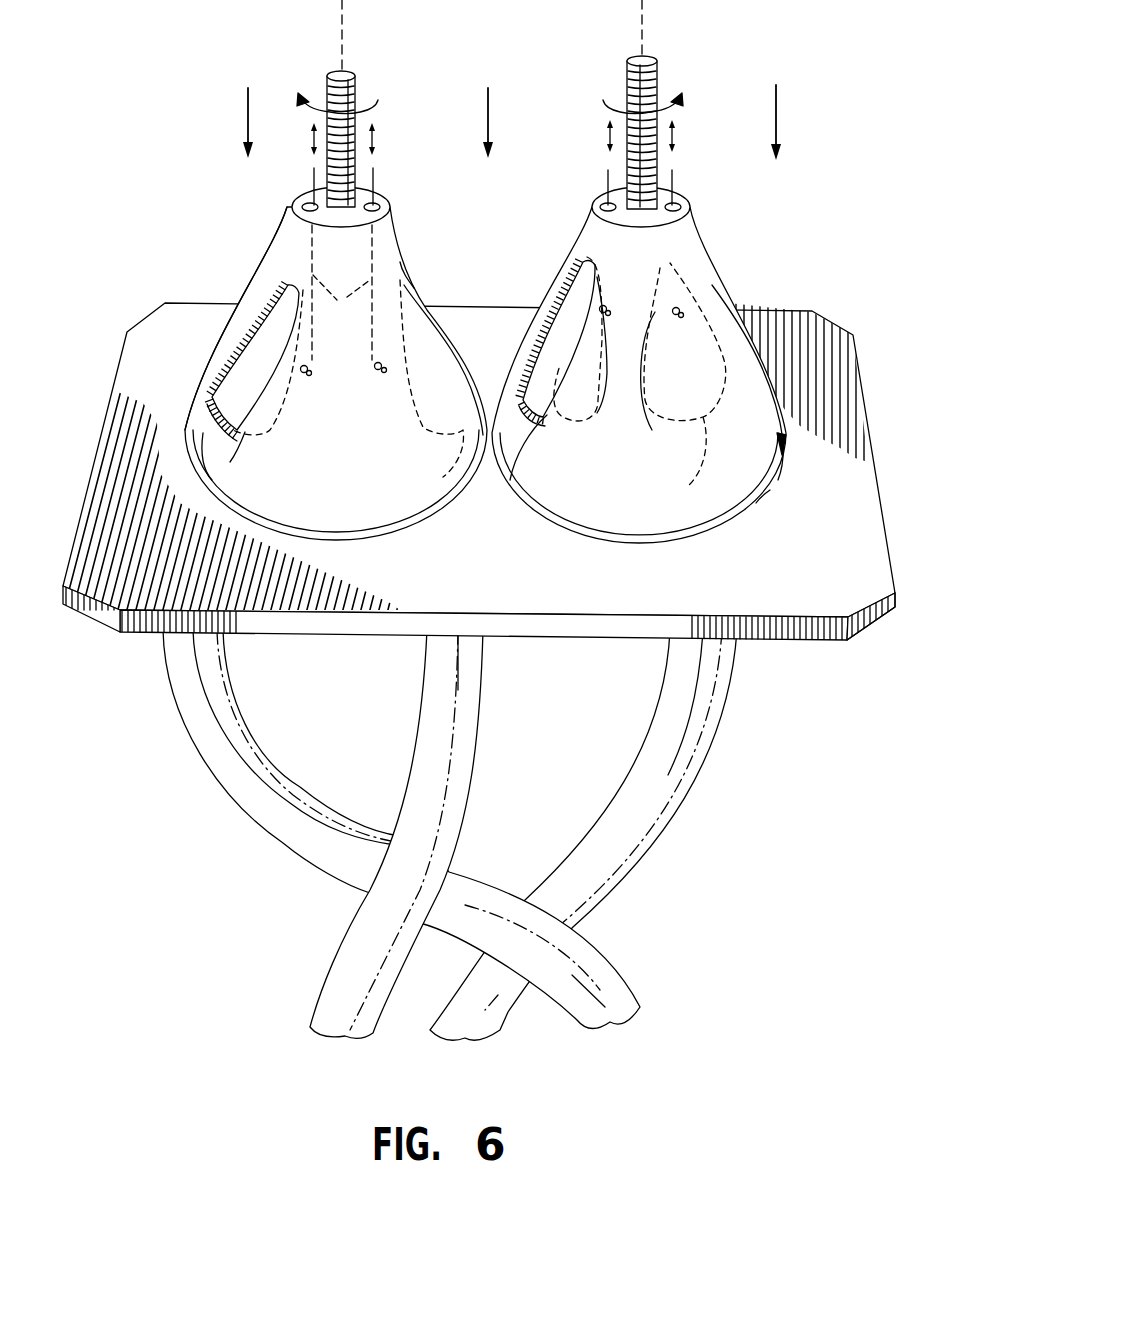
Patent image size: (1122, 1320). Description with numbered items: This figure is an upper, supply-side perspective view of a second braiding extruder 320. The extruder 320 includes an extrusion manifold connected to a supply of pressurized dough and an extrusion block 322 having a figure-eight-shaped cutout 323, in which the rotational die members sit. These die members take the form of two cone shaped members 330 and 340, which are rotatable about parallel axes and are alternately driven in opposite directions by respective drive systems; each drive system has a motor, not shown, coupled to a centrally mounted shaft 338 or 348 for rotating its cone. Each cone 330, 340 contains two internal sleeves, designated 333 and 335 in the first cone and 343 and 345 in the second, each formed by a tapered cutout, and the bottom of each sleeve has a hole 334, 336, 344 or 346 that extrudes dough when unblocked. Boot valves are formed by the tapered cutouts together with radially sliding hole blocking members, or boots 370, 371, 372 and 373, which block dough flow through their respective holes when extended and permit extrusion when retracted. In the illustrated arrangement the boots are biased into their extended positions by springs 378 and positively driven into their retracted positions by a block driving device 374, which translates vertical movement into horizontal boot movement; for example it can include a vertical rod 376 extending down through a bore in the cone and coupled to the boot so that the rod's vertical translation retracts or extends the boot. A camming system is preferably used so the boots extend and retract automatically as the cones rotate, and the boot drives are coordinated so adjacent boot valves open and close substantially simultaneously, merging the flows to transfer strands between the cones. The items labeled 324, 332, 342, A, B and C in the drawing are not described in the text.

The braiding extruder 320 is at (840, 112).
The extrusion block 322 is at (855, 607).
The figure-eight-shaped cutout 323 is at (770, 490).
The base plate 324 is at (492, 483).
The cone shaped member 330 is at (399, 362).
The first funnel axis 332 is at (344, 40).
The internal sleeve 333 is at (238, 335).
The hole 334 is at (233, 435).
The internal sleeve 335 is at (413, 288).
The hole 336 is at (450, 468).
The shaft 338 is at (349, 92).
The cone shaped member 340 is at (707, 356).
The second funnel axis 342 is at (645, 33).
The internal sleeve 343 is at (560, 297).
The hole 344 is at (523, 427).
The internal sleeve 345 is at (717, 305).
The hole 346 is at (771, 393).
The shaft 348 is at (659, 78).
The boot 370 is at (292, 317).
The boot 371 is at (420, 305).
The boot 372 is at (547, 313).
The boot 373 is at (690, 485).
The block driving device 374 is at (492, 286).
The vertical rod 376 is at (318, 183).
The spring 378 is at (302, 373).
The tube A is at (249, 815).
The tube B is at (426, 706).
The tube C is at (656, 708).